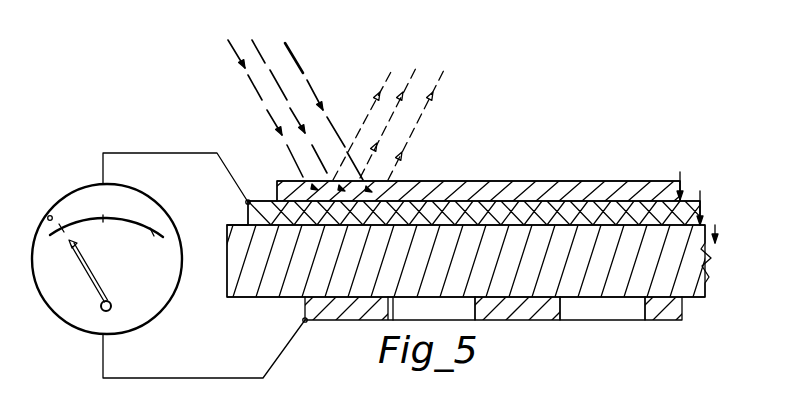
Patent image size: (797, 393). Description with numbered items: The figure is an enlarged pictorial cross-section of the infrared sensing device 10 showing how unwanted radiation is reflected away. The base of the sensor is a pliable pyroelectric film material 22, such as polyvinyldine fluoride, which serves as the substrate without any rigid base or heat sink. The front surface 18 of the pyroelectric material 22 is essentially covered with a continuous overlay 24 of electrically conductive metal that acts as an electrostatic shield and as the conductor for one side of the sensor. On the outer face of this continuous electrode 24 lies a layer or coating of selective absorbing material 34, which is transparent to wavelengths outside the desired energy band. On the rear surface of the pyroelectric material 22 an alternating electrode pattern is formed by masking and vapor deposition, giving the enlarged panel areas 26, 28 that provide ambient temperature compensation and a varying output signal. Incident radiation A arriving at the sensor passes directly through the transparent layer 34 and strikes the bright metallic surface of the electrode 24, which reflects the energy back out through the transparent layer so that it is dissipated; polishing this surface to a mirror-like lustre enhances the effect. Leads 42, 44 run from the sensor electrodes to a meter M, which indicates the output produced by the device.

The infrared sensing device 10 is at (556, 179).
The surface of the pyroelectric material 18 is at (620, 189).
The layer or coating of selective absorbing material 34 is at (741, 160).
The continuous overlay of electrically conductive material 24 is at (703, 213).
The pliable pyroelectric film material 22 is at (683, 253).
The electrode panel area 26 is at (348, 312).
The electrode panel area 28 is at (537, 317).
The lead wire 42 is at (193, 153).
The lead wire 44 is at (216, 378).
The meter M is at (73, 317).
The incident radiation A is at (336, 93).